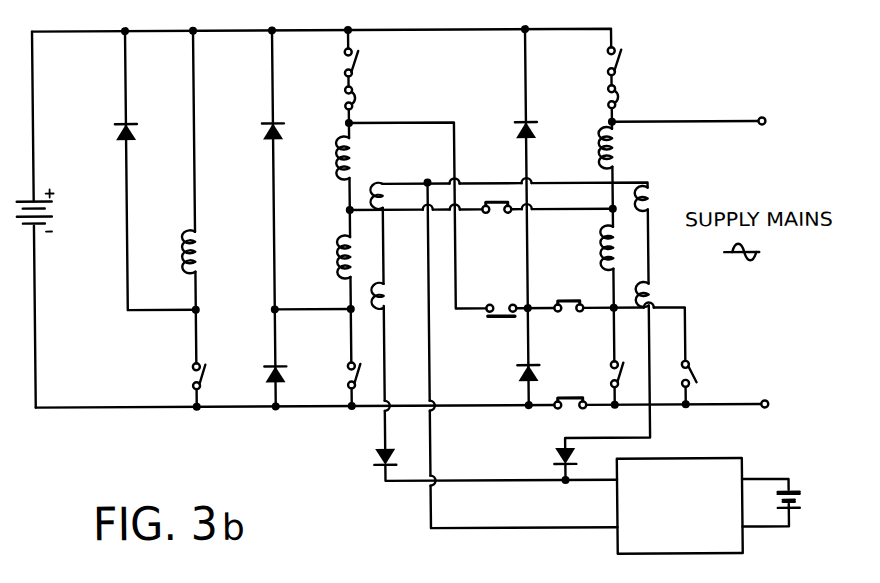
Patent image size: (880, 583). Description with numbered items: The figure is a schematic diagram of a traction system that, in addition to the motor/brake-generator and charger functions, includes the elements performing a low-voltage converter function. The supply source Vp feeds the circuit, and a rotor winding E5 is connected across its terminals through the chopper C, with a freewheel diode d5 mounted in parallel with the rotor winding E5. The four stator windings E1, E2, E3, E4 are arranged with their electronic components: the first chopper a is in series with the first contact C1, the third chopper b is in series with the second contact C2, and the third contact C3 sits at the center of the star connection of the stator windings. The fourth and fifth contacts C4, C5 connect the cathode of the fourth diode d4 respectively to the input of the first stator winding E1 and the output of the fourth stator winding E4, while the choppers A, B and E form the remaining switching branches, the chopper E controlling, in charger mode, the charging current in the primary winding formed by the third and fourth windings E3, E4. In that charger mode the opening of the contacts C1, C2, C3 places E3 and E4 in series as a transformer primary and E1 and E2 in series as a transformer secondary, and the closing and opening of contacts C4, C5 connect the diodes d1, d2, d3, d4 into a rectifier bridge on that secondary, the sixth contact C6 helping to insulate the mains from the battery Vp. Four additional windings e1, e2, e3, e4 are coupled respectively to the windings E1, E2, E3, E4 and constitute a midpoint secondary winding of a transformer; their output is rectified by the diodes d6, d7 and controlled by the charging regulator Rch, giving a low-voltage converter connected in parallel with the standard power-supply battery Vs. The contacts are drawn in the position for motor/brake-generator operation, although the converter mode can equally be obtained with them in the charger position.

The supply source Vp is at (49, 211).
The standard power-supply battery Vs is at (777, 507).
The charging regulator Rch is at (688, 459).
The first diode d1 is at (260, 169).
The second diode d2 is at (513, 168).
The third diode d3 is at (262, 357).
The fourth diode d4 is at (516, 356).
The freewheel diode d5 is at (141, 171).
The rectifying diode d6 is at (369, 459).
The rectifying diode d7 is at (553, 458).
The first stator winding E1 is at (359, 186).
The second stator winding E2 is at (333, 299).
The third stator winding E3 is at (624, 177).
The fourth stator winding E4 is at (594, 293).
The rotor winding E5 is at (208, 170).
The winding e1 is at (391, 197).
The winding e2 is at (392, 296).
The winding e3 is at (658, 198).
The winding e4 is at (658, 294).
The first contact C1 is at (365, 112).
The second contact C2 is at (627, 107).
The third contact C3 is at (496, 220).
The fourth contact C4 is at (501, 297).
The fifth contact C5 is at (568, 294).
The sixth contact C6 is at (570, 390).
The first chopper a is at (359, 58).
The third chopper b is at (623, 66).
The chopper A is at (345, 384).
The chopper B is at (609, 383).
The chopper C is at (207, 358).
The seventh chopper E is at (698, 375).